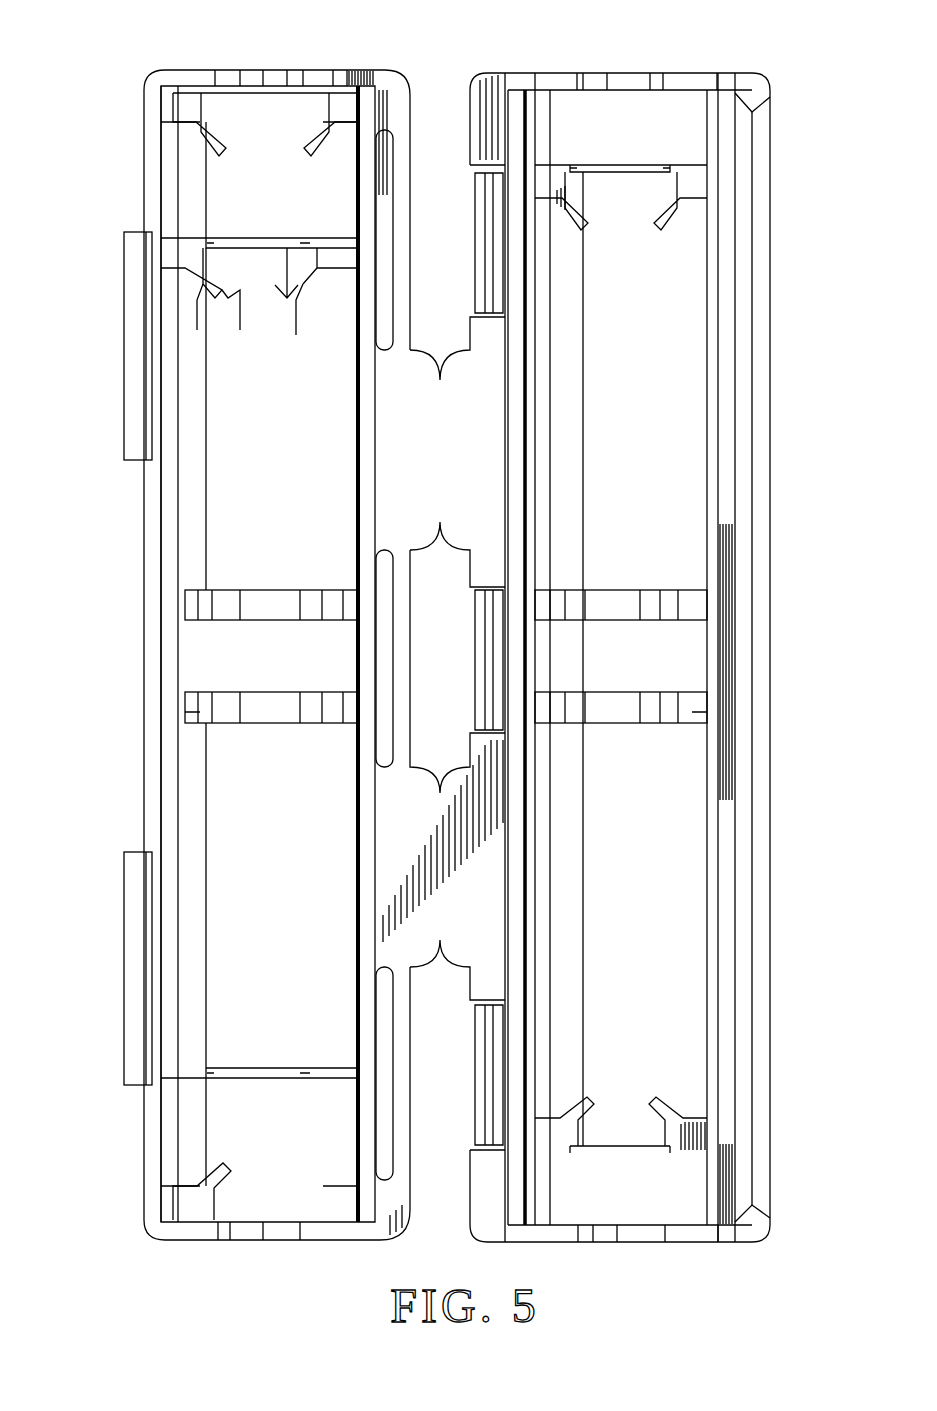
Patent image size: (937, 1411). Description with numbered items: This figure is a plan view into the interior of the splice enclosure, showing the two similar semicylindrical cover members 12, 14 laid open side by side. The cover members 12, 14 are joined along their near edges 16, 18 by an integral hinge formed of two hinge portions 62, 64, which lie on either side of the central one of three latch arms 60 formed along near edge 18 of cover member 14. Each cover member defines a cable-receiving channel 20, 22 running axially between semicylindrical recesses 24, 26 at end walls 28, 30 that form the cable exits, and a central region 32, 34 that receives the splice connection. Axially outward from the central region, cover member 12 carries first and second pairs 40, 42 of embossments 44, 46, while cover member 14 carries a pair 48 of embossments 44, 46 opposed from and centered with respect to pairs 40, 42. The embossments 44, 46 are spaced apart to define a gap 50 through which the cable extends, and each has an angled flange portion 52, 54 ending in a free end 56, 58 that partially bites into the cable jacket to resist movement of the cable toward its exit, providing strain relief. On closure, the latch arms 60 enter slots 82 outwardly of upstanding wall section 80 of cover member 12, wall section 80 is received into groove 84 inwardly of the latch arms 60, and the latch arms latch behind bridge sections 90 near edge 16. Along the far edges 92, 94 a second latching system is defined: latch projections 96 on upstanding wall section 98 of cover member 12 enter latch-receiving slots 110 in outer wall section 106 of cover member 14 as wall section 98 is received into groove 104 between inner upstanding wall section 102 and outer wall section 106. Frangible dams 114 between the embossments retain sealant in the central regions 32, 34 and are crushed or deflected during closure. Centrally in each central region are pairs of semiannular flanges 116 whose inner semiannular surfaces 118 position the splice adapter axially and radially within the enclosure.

The cover member 12 is at (148, 150).
The cover member 14 is at (790, 155).
The near edge 16 is at (403, 122).
The near edge 18 is at (478, 160).
The cable-receiving channel 20 is at (258, 100).
The cable-receiving channel 22 is at (627, 128).
The semicylindrical recess 24 is at (290, 80).
The semicylindrical recess 26 is at (250, 1238).
The end wall 28 is at (345, 78).
The end wall 30 is at (305, 1237).
The central region 32 is at (234, 572).
The central region 34 is at (680, 762).
The first pair of embossments 40 is at (178, 290).
The second pair of embossments 42 is at (190, 150).
The embossment 44 is at (188, 103).
The embossment 46 is at (322, 310).
The pair of embossments 48 is at (683, 207).
The gap 50 is at (258, 230).
The flange portion 52 is at (205, 300).
The flange portion 54 is at (282, 303).
The free end 56 is at (238, 303).
The free end 58 is at (296, 292).
The latch arm 60 is at (487, 222).
The hinge portion 62 is at (420, 770).
The hinge portion 64 is at (440, 382).
The upstanding wall section 80 is at (356, 456).
The slot 82 is at (385, 258).
The groove 84 is at (520, 440).
The bridge section 90 is at (400, 200).
The far edge 92 is at (150, 680).
The far edge 94 is at (770, 718).
The latch projection 96 is at (125, 420).
The upstanding wall section 98 is at (150, 620).
The inner upstanding wall section 102 is at (715, 370).
The groove 104 is at (740, 520).
The outer wall section 106 is at (770, 447).
The latch-receiving slot 110 is at (740, 195).
The frangible dam 114 is at (265, 238).
The semiannular flange 116 is at (195, 700).
The inner semiannular surface 118 is at (200, 713).